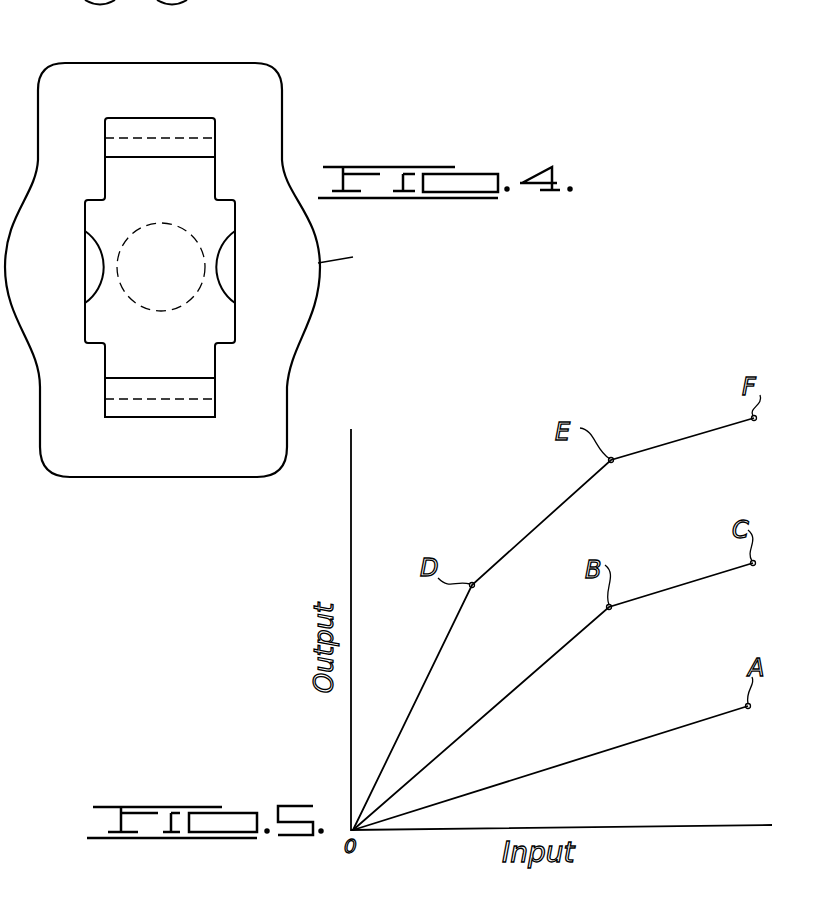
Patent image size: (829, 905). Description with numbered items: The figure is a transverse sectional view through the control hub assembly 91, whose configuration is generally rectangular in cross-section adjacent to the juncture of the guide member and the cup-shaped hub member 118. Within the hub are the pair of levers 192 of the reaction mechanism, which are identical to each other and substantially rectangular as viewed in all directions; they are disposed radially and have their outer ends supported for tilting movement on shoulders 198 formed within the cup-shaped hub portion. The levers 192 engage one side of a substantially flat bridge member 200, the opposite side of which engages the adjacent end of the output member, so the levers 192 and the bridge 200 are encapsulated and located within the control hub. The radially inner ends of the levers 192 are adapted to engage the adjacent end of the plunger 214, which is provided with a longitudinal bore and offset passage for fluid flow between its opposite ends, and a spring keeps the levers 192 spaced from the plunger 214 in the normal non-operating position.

The control hub assembly 91 is at (233, 60).
The shoulders 198 is at (188, 134).
The levers 192 is at (103, 150).
The bridge member 200 is at (208, 180).
The cup-shaped hub member 118 is at (360, 264).
The plunger 214 is at (158, 313).